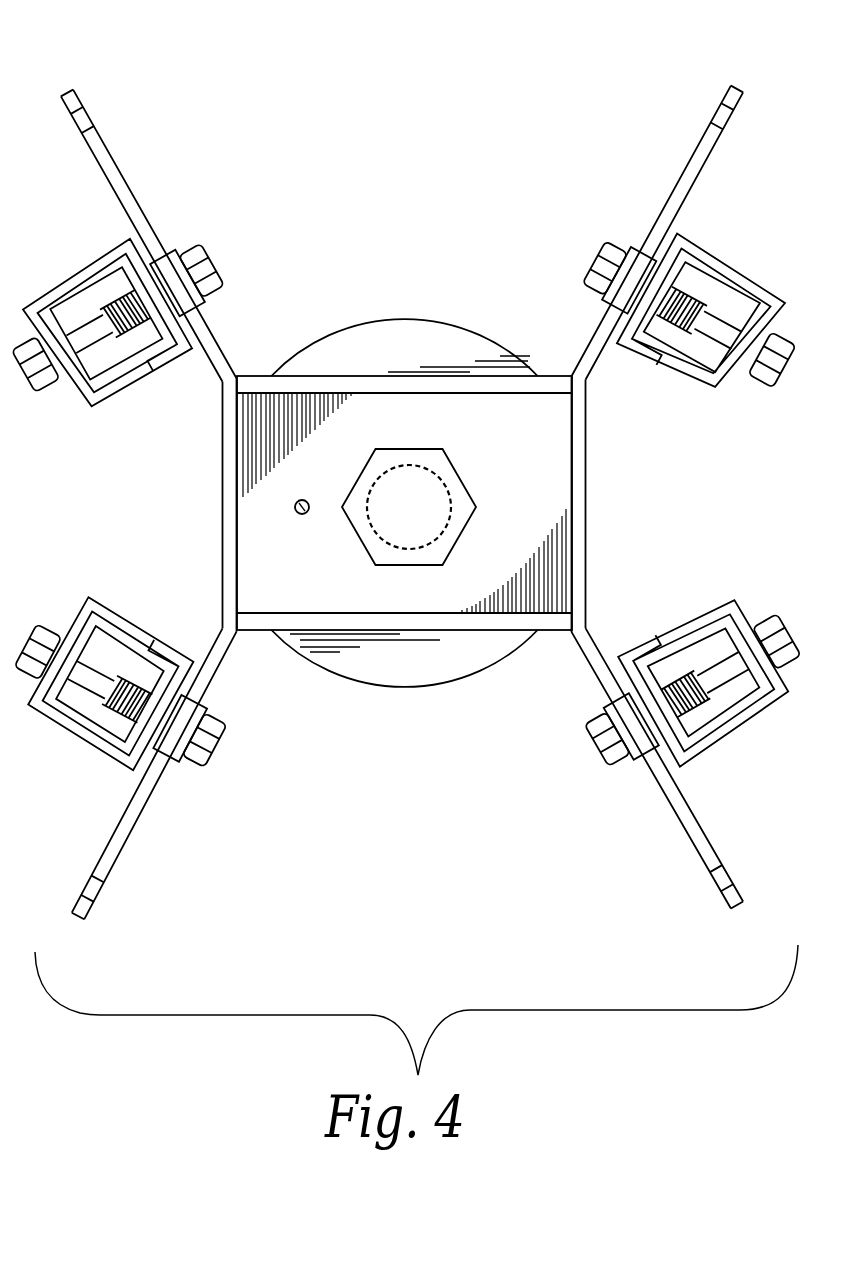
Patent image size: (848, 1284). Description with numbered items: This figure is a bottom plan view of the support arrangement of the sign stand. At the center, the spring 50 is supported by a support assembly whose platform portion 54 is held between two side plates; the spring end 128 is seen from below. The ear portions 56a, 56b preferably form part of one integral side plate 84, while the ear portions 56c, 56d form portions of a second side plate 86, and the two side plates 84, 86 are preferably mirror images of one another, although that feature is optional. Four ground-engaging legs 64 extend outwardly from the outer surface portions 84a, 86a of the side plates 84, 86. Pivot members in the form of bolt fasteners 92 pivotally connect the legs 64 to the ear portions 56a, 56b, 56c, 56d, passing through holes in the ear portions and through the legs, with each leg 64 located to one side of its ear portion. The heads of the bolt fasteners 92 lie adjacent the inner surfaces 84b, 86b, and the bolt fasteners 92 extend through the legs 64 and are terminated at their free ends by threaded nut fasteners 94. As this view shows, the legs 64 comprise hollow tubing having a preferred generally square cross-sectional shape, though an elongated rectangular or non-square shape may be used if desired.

The spring 50 is at (394, 330).
The platform portion 54 is at (542, 402).
The ear portion 56a is at (66, 92).
The ear portion 56b is at (126, 831).
The ear portion 56c is at (737, 86).
The ear portion 56d is at (679, 828).
The ground-engaging leg 64 is at (70, 282).
The side plate 84 is at (236, 578).
The outer surface portion 84a is at (222, 418).
The inner surface 84b is at (121, 170).
The second side plate 86 is at (586, 570).
The outer surface portion 86a is at (586, 418).
The inner surface 86b is at (700, 150).
The bolt fastener 92 is at (45, 385).
The threaded nut fastener 94 is at (207, 262).
The opposed end of spring 128 is at (262, 388).